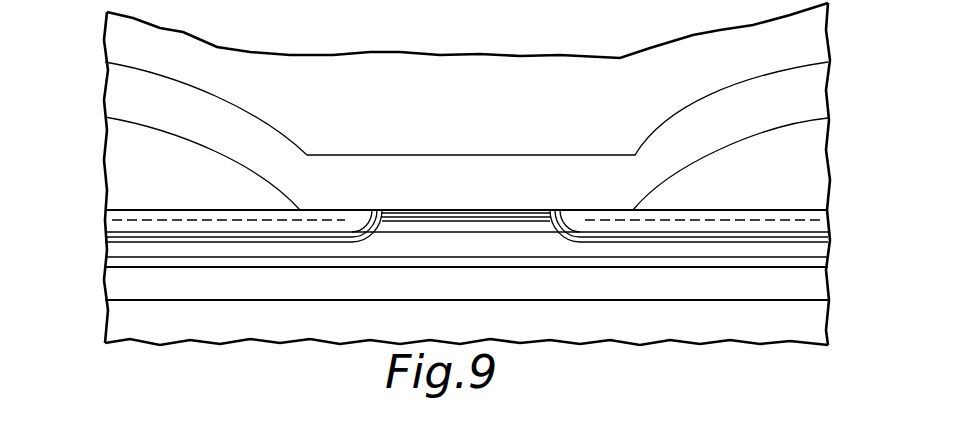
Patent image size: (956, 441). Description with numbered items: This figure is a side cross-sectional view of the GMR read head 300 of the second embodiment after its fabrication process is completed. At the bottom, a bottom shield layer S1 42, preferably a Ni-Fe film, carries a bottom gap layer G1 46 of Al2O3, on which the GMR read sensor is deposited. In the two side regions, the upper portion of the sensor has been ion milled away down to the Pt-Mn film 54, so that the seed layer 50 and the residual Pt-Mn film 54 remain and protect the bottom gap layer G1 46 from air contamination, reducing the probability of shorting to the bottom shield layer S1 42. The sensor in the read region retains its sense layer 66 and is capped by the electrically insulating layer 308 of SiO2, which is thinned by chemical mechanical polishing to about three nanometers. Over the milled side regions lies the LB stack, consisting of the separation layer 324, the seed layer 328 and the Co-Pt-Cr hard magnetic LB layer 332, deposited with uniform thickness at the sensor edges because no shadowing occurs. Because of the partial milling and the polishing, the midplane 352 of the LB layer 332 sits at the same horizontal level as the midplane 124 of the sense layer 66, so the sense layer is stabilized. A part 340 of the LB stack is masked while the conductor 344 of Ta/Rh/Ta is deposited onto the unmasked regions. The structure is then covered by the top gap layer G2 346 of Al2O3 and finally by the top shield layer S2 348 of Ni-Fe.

The GMR read head 300 is at (372, 36).
The top shield layer 348 is at (403, 104).
The top shield layer S2 is at (490, 106).
The conductor 344 is at (160, 161).
The top gap layer 346 is at (403, 188).
The LB layer 332 is at (112, 219).
The seed layer 328 is at (118, 233).
The separation layer 324 is at (137, 238).
The Pt-Mn film 54 is at (530, 239).
The seed layer 50 is at (395, 266).
The bottom gap layer 46 is at (433, 285).
The bottom shield layer 42 is at (535, 332).
The bottom shield layer S1 is at (688, 332).
The bottom gap layer G1 is at (717, 284).
The part of the LB stack 340 is at (317, 211).
The sense layer 66 is at (448, 211).
The electrically insulating layer 308 is at (505, 211).
The top gap layer G2 is at (493, 192).
The midplane of the LB layer 352 is at (207, 204).
The midplane of the sense layer 124 is at (277, 208).